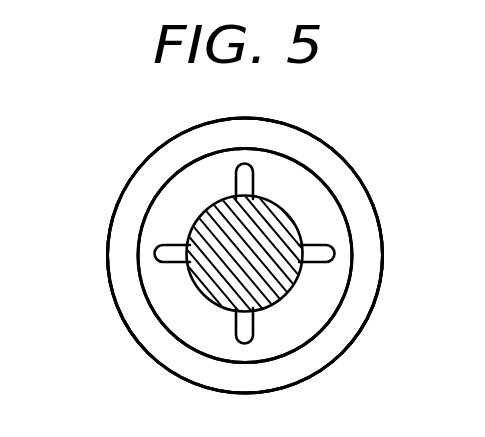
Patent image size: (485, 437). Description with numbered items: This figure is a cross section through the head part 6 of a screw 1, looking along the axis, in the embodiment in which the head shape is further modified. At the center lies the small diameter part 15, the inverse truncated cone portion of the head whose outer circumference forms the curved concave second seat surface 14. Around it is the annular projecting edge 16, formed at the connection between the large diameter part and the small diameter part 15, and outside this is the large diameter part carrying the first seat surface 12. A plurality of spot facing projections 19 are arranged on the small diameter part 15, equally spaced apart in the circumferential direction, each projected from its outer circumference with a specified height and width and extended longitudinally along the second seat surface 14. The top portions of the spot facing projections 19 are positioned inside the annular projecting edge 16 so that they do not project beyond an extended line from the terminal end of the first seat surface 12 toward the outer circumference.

The screw 1 is at (378, 186).
The head part 6 is at (127, 323).
The first seat surface 12 is at (158, 165).
The second seat surface 14 is at (305, 312).
The small diameter part 15 is at (205, 268).
The annular projecting edge 16 is at (173, 338).
The spot facing projections 19 is at (248, 178).